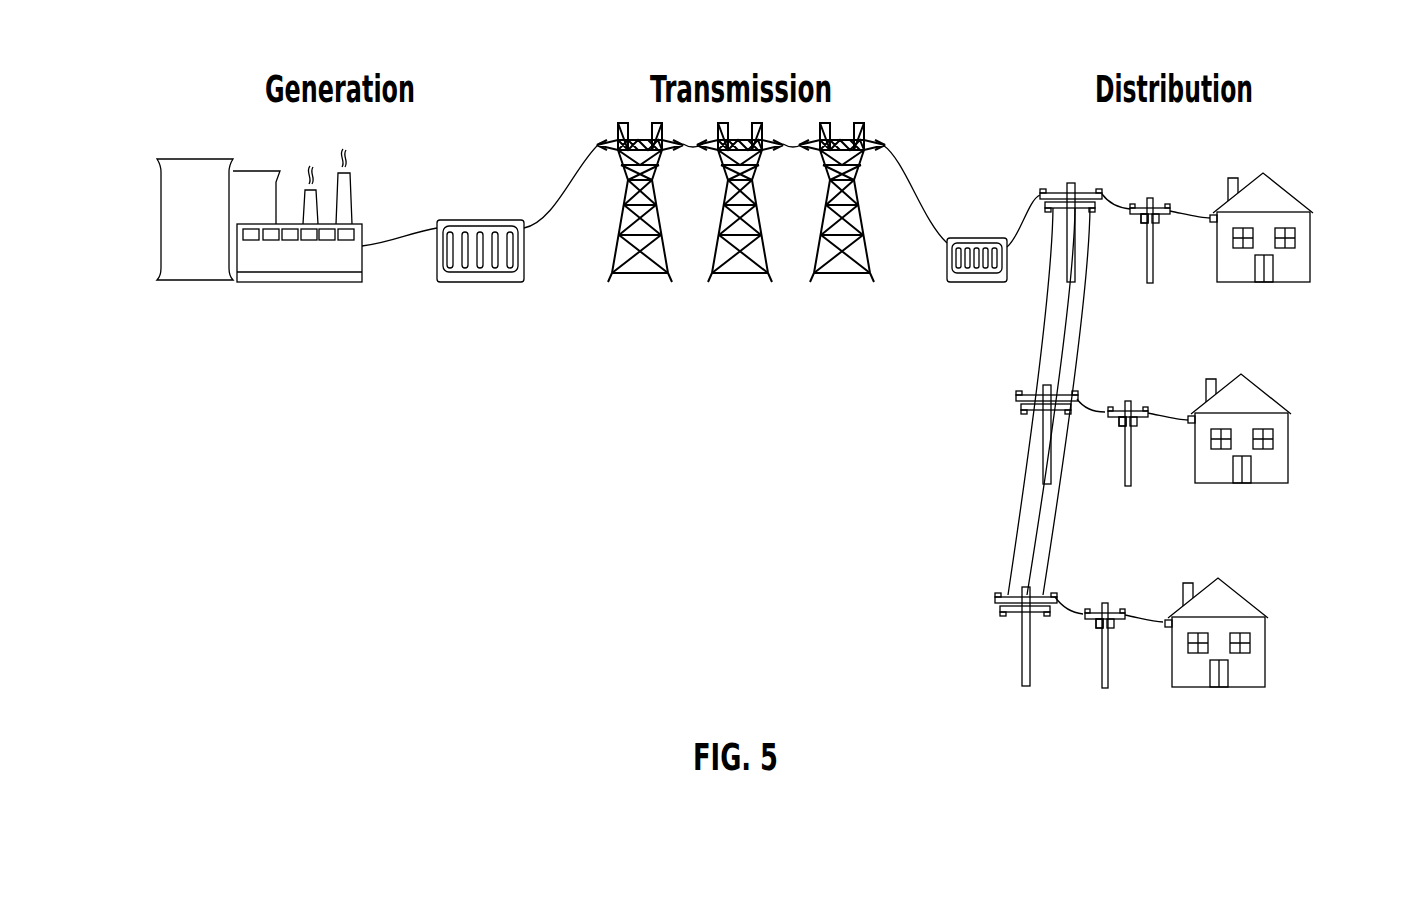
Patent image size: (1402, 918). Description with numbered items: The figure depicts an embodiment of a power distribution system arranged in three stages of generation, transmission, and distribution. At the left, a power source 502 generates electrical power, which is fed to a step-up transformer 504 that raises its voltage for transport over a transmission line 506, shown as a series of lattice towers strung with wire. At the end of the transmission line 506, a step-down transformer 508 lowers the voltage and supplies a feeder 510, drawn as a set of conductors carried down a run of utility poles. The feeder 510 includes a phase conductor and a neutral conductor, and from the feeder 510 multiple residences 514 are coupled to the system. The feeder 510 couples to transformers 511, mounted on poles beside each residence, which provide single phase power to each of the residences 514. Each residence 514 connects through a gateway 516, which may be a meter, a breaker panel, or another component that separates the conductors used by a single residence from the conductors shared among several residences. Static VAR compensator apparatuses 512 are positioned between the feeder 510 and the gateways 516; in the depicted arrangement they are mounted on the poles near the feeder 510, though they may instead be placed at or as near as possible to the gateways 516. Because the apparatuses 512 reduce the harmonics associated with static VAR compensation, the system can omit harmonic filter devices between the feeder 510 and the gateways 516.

The power source 502 is at (158, 225).
The step-up transformer 504 is at (480, 220).
The transmission line 506 is at (740, 282).
The step-down transformer 508 is at (975, 283).
The feeder 510 is at (1022, 495).
The transformers 511 is at (1143, 223).
The static VAR compensator apparatuses 512 is at (1150, 210).
The residences 514 is at (1312, 247).
The gateways 516 is at (1210, 225).